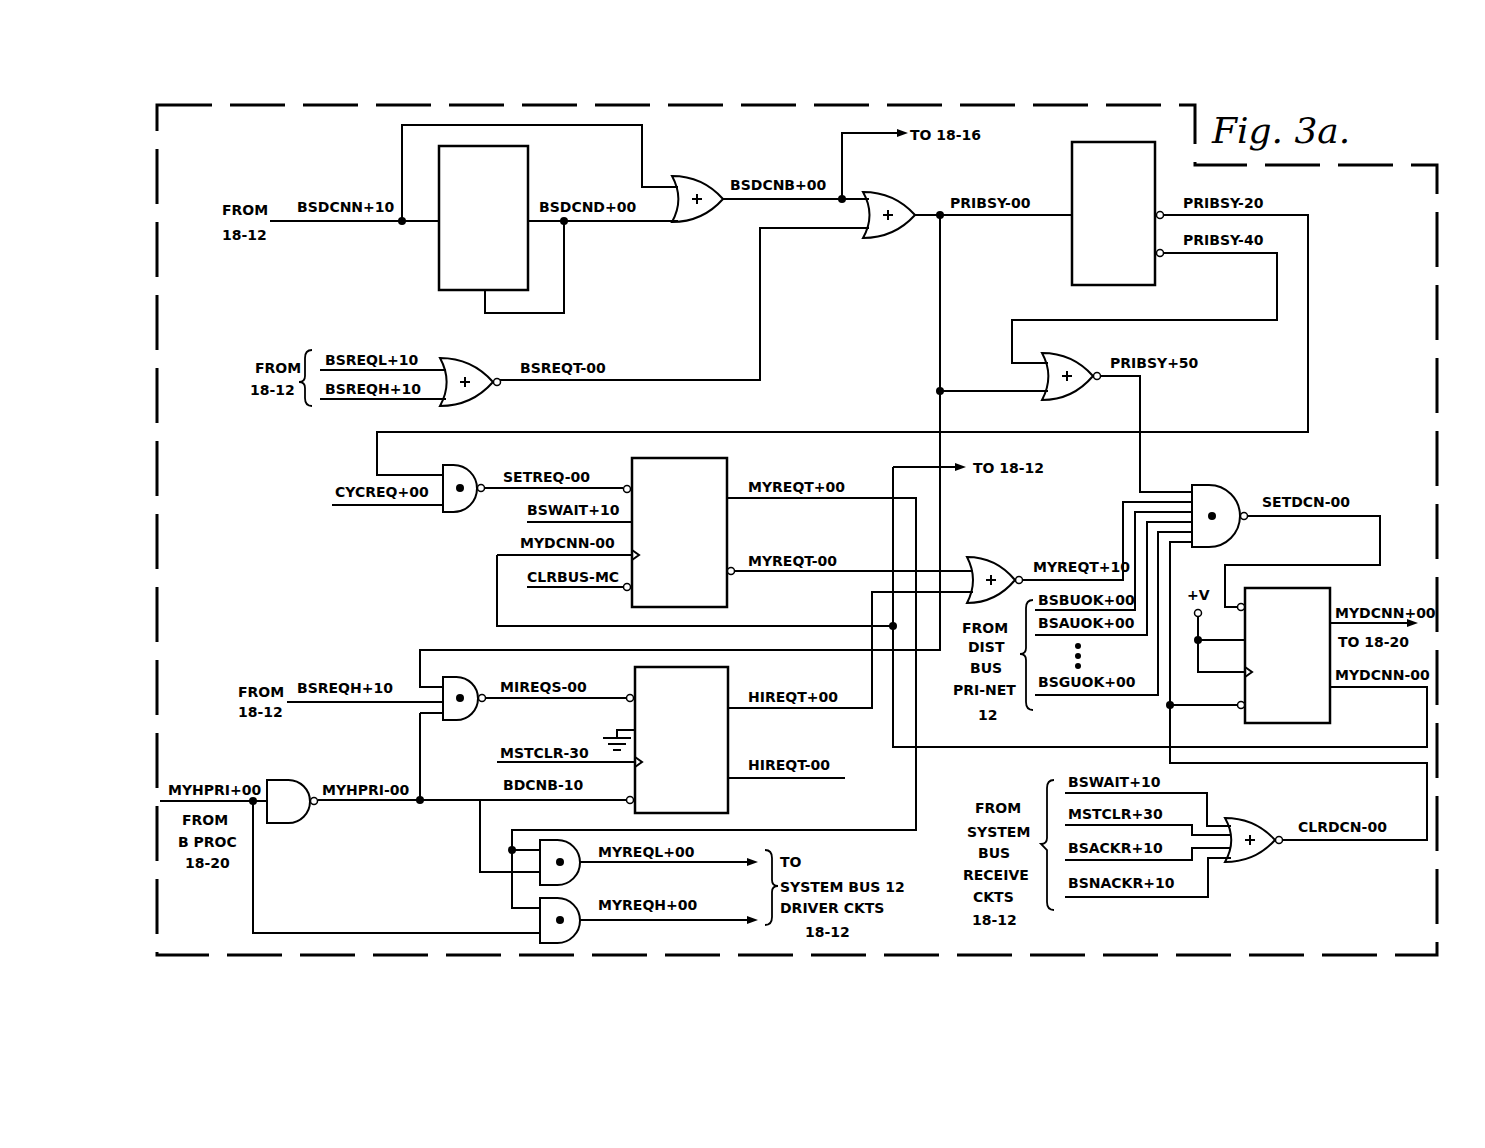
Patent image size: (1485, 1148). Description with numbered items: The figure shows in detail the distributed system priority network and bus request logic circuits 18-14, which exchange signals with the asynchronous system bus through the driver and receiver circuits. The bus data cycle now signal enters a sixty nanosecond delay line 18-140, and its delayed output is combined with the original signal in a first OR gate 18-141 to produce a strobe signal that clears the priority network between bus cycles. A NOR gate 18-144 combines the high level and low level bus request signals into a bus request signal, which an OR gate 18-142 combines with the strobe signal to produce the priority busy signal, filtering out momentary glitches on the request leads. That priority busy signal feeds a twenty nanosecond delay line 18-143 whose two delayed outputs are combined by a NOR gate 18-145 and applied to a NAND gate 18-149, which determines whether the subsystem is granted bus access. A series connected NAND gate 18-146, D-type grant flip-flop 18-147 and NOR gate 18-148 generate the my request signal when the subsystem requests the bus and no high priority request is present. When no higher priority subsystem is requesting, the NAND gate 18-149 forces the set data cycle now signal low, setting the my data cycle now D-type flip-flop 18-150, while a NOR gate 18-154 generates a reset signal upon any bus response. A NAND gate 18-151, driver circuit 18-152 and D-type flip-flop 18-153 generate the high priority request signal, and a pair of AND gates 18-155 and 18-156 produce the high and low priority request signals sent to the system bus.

The distributed system priority network and bus request logic circuits 18-14 is at (322, 594).
The 60 nanosecond delay line 18-140 is at (439, 242).
The first OR gate 18-141 is at (695, 176).
The OR gate 18-142 is at (885, 238).
The twenty nanosecond delay line 18-143 is at (1093, 142).
The NOR gate 18-144 is at (482, 399).
The NOR gate 18-145 is at (1080, 400).
The NAND gate 18-146 is at (460, 512).
The D-type grant flip-flop 18-147 is at (727, 595).
The NOR gate 18-148 is at (985, 557).
The NAND gate 18-149 is at (1218, 487).
The my data cycle now D-type flip-flop 18-150 is at (1292, 588).
The NAND gate 18-151 is at (455, 720).
The driver circuit 18-152 is at (283, 780).
The D-type flip-flop 18-153 is at (728, 803).
The NOR gate 18-154 is at (1258, 858).
The AND gate 18-155 is at (572, 880).
The AND gate 18-156 is at (572, 938).